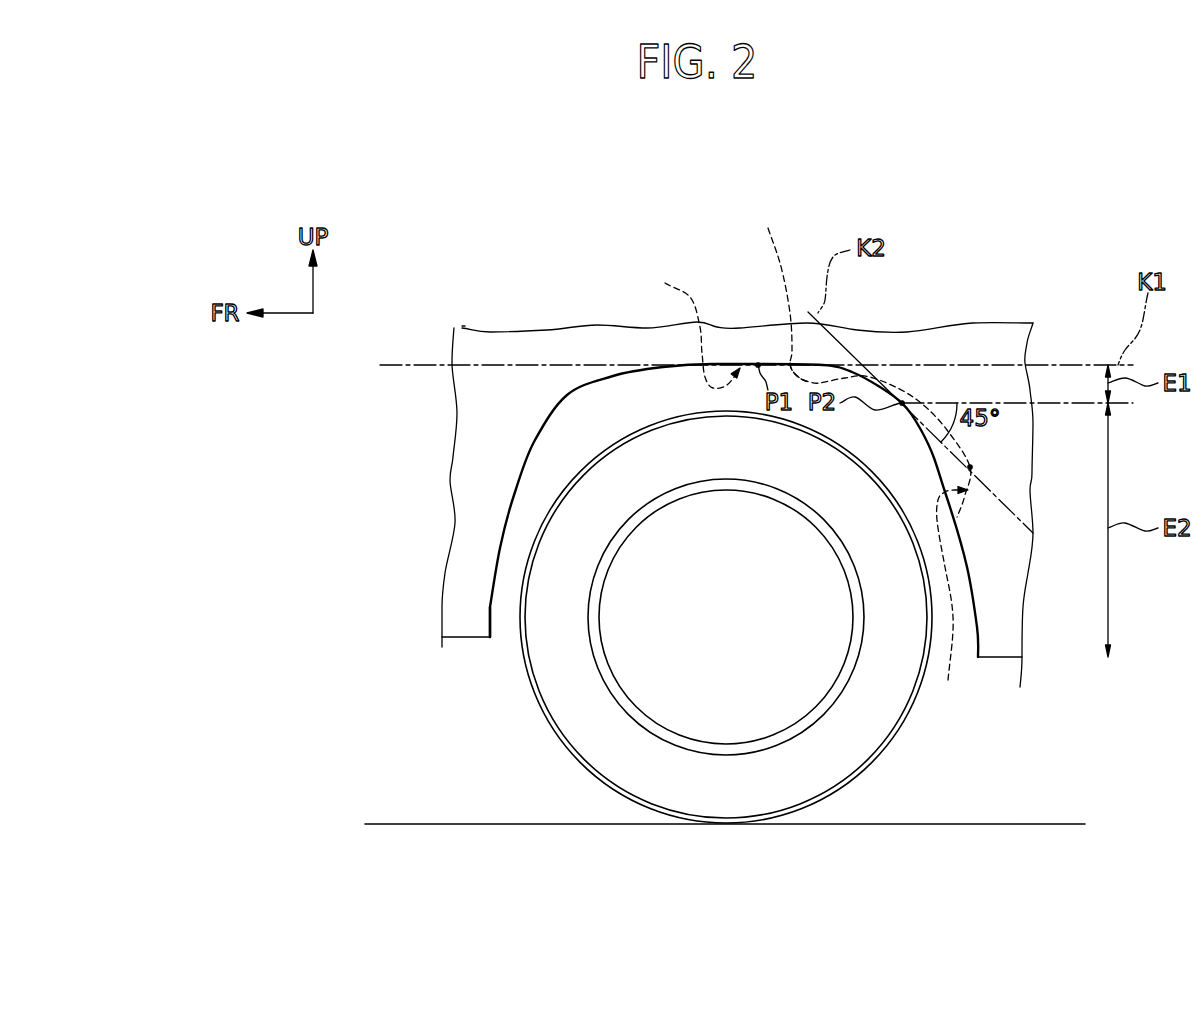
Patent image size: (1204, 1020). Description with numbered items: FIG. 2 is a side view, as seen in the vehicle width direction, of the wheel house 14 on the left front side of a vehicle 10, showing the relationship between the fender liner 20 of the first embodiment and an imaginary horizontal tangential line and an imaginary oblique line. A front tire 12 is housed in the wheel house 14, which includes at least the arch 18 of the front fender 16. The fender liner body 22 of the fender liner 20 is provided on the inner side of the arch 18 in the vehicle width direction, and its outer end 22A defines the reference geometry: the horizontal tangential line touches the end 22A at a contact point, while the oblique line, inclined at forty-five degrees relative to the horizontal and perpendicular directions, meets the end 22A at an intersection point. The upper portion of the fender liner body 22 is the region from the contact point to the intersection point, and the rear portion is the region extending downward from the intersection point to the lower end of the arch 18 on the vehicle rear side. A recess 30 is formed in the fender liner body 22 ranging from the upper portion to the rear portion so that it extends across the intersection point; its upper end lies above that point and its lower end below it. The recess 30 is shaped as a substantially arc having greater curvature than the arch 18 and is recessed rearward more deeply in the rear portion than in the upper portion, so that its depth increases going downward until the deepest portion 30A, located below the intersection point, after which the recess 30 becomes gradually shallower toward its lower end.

The vehicle 10 is at (955, 293).
The front tire 12 is at (572, 758).
The wheel house 14 is at (492, 612).
The front fender 16 is at (473, 346).
The arch 18 is at (508, 480).
The fender liner 20 is at (685, 329).
The fender liner body 22 is at (858, 358).
The end of fender liner body 22A is at (790, 360).
The recess 30 is at (951, 600).
The deepest portion 30A is at (975, 467).